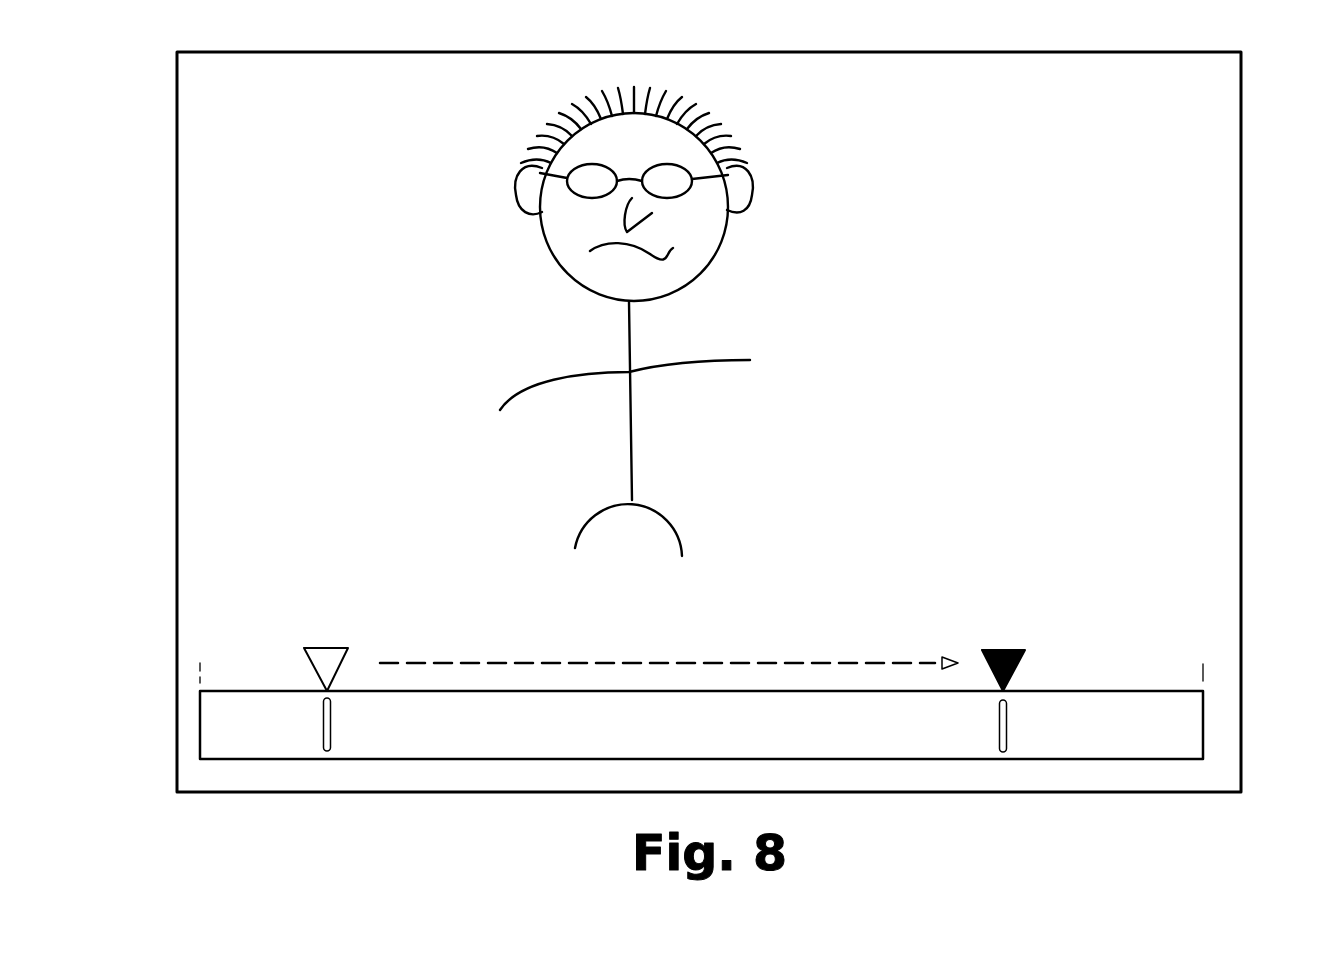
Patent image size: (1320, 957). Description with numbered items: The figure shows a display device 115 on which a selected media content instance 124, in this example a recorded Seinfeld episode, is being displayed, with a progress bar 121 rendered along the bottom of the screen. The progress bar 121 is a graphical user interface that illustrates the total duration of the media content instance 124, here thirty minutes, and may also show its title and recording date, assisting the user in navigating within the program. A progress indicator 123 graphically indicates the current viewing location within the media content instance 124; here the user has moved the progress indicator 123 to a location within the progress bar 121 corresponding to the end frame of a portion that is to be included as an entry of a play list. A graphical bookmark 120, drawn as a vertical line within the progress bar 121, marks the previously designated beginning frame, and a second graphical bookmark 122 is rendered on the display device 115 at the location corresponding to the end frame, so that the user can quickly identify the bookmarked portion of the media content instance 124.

The display device 115 is at (1242, 119).
The graphical bookmark 120 is at (331, 732).
The progress bar 121 is at (199, 725).
The graphical bookmark 122 is at (1008, 732).
The progress indicator 123 is at (1007, 645).
The media content instance 124 is at (840, 207).